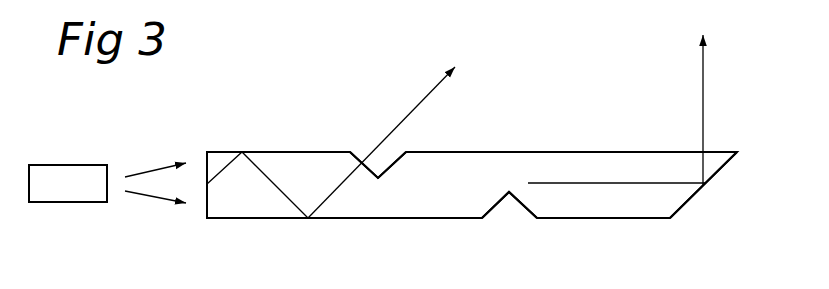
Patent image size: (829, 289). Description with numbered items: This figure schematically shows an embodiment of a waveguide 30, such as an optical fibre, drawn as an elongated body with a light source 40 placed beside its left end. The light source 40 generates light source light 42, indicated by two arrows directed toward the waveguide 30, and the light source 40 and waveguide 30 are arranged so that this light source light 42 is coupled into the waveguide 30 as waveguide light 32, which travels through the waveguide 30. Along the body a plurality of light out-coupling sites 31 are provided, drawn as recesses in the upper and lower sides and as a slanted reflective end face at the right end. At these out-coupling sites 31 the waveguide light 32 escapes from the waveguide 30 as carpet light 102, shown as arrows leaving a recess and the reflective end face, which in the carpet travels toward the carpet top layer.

The waveguide 30 is at (398, 198).
The light out-coupling site 31 is at (366, 150).
The waveguide light 32 is at (283, 195).
The light source 40 is at (74, 185).
The light source light 42 is at (158, 193).
The carpet light 102 is at (425, 98).